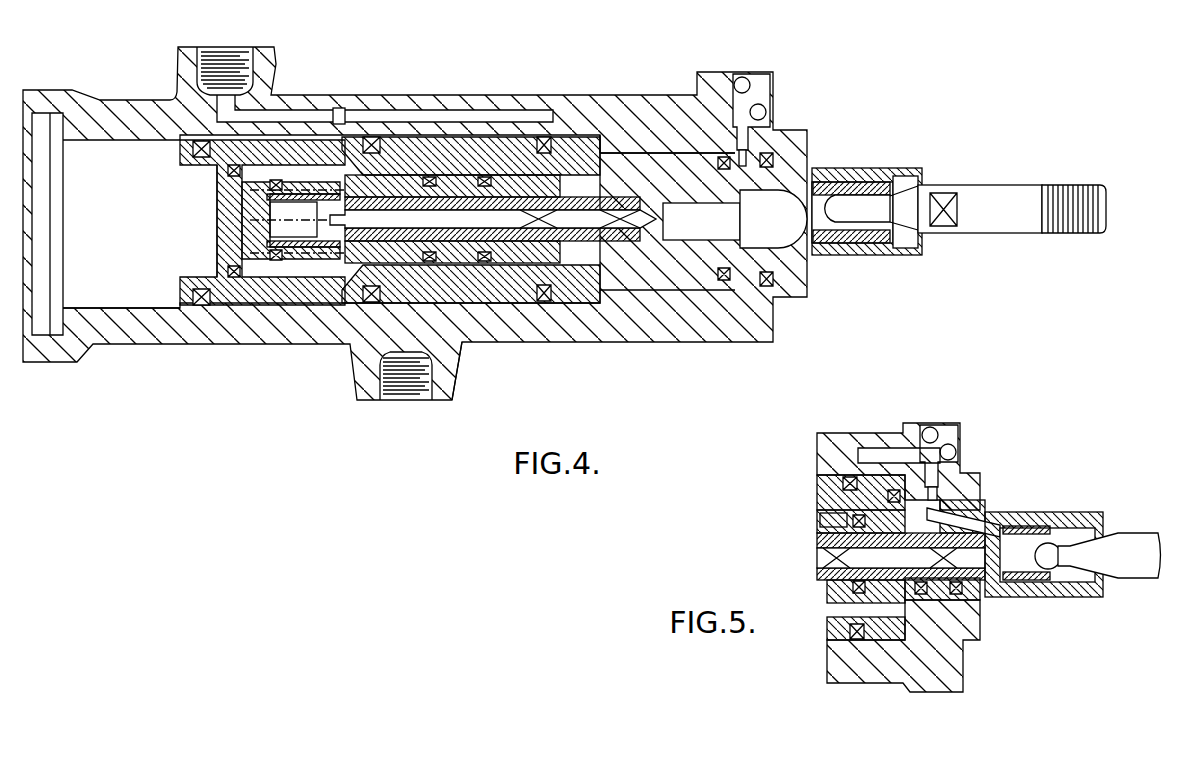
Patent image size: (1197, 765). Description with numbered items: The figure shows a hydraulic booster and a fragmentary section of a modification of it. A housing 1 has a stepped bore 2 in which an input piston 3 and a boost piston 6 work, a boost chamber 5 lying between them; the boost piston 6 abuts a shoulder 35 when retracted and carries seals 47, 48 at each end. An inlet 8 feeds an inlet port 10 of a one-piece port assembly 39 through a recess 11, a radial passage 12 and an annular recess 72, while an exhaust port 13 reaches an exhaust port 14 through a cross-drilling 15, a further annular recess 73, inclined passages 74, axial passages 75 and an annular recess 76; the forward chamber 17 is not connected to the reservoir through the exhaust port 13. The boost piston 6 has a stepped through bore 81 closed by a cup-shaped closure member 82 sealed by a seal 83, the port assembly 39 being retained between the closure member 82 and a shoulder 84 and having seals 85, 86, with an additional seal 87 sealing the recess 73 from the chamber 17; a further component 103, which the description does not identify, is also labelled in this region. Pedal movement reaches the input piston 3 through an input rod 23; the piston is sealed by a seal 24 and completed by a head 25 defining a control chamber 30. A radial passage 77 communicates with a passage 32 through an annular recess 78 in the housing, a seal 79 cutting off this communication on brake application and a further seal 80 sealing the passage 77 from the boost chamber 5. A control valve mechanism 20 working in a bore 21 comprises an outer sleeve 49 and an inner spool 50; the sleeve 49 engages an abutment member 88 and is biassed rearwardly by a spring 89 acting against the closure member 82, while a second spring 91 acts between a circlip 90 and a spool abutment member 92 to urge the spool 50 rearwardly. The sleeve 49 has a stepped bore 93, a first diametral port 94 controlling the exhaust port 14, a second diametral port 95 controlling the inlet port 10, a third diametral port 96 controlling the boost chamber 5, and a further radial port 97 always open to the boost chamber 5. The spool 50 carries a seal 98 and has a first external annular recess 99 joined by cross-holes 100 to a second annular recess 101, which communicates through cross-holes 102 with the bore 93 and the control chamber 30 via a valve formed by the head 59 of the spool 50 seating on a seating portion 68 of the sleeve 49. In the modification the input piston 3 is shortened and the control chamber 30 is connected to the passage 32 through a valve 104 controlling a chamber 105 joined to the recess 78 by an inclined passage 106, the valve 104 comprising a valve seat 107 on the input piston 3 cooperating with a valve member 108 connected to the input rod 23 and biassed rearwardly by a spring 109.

In FIG. 4, the housing 1 is at (720, 72).
In FIG. 5, the housing 1 is at (883, 434).
In FIG. 4, the stepped bore 2 is at (117, 313).
In FIG. 4, the input piston 3 is at (865, 250).
In FIG. 5, the input piston 3 is at (1103, 585).
In FIG. 4, the boost chamber 5 is at (560, 303).
In FIG. 5, the boost chamber 5 is at (837, 518).
In FIG. 4, the boost piston 6 is at (218, 305).
In FIG. 5, the boost piston 6 is at (822, 637).
In FIG. 4, the inlet 8 is at (407, 385).
In FIG. 4, the inlet port 10 is at (448, 140).
In FIG. 4, the recess 11 is at (467, 283).
In FIG. 4, the radial passage 12 is at (447, 263).
In FIG. 4, the exhaust port 13 is at (237, 60).
In FIG. 4, the exhaust port 14 is at (407, 127).
In FIG. 4, the cross-drilling 15 is at (672, 110).
In FIG. 5, the cross-drilling 15 is at (837, 450).
In FIG. 4, the forward chamber 17 is at (145, 287).
In FIG. 4, the control valve mechanism 20 is at (430, 140).
In FIG. 4, the bore 21 is at (653, 303).
In FIG. 4, the input rod 23 is at (985, 193).
In FIG. 5, the input rod 23 is at (1137, 540).
In FIG. 4, the seal 24 is at (793, 295).
In FIG. 5, the seal 24 is at (968, 645).
In FIG. 4, the head 25 is at (565, 173).
In FIG. 4, the control chamber 30 is at (725, 280).
In FIG. 5, the control chamber 30 is at (973, 592).
In FIG. 4, the radial passage 32 is at (745, 130).
In FIG. 5, the radial passage 32 is at (935, 472).
In FIG. 4, the shoulder 35 is at (600, 287).
In FIG. 4, the port assembly 39 is at (482, 150).
In FIG. 4, the seal 47 is at (362, 150).
In FIG. 4, the seal 48 is at (583, 303).
In FIG. 5, the seal 48 is at (850, 647).
In FIG. 4, the outer sleeve 49 is at (618, 183).
In FIG. 5, the outer sleeve 49 is at (820, 540).
In FIG. 4, the inner spool 50 is at (673, 287).
In FIG. 5, the inner spool 50 is at (823, 562).
In FIG. 4, the head 59 is at (665, 213).
In FIG. 4, the seating portion 68 is at (640, 196).
In FIG. 4, the annular recess 72 is at (462, 347).
In FIG. 4, the annular recess 73 is at (265, 145).
In FIG. 4, the inclined passages 74 is at (345, 118).
In FIG. 4, the axial passages 75 is at (343, 128).
In FIG. 4, the annular recess 76 is at (382, 172).
In FIG. 4, the radial passage 77 is at (770, 187).
In FIG. 4, the annular recess 78 is at (773, 320).
In FIG. 4, the seal 79 is at (742, 310).
In FIG. 5, the seal 79 is at (960, 668).
In FIG. 4, the seal 80 is at (617, 293).
In FIG. 4, the stepped through bore 81 is at (195, 158).
In FIG. 4, the closure member 82 is at (264, 275).
In FIG. 4, the seal 83 is at (227, 273).
In FIG. 4, the shoulder 84 is at (510, 173).
In FIG. 4, the seal 85 is at (413, 383).
In FIG. 4, the seal 86 is at (538, 300).
In FIG. 4, the seal 87 is at (203, 305).
In FIG. 4, the abutment member 88 is at (353, 250).
In FIG. 4, the spring 89 is at (257, 243).
In FIG. 4, the circlip 90 is at (267, 217).
In FIG. 4, the second spring 91 is at (247, 227).
In FIG. 4, the spool abutment member 92 is at (318, 268).
In FIG. 4, the stepped bore 93 is at (398, 250).
In FIG. 4, the first diametral port 94 is at (398, 330).
In FIG. 4, the second diametral port 95 is at (490, 268).
In FIG. 4, the third diametral port 96 is at (560, 320).
In FIG. 4, the radial port 97 is at (557, 180).
In FIG. 4, the seal 98 is at (392, 268).
In FIG. 4, the first external annular recess 99 is at (447, 210).
In FIG. 4, the cross-holes 100 is at (553, 173).
In FIG. 5, the cross-holes 100 is at (827, 583).
In FIG. 4, the second annular recess 101 is at (603, 193).
In FIG. 4, the cross-holes 102 is at (668, 250).
In FIG. 4, the seal 103 is at (240, 280).
In FIG. 5, the valve 104 is at (1033, 592).
In FIG. 5, the chamber 105 is at (1070, 588).
In FIG. 5, the inclined passage 106 is at (988, 507).
In FIG. 5, the valve seat 107 is at (1010, 530).
In FIG. 5, the valve member 108 is at (1053, 517).
In FIG. 5, the spring 109 is at (1010, 597).